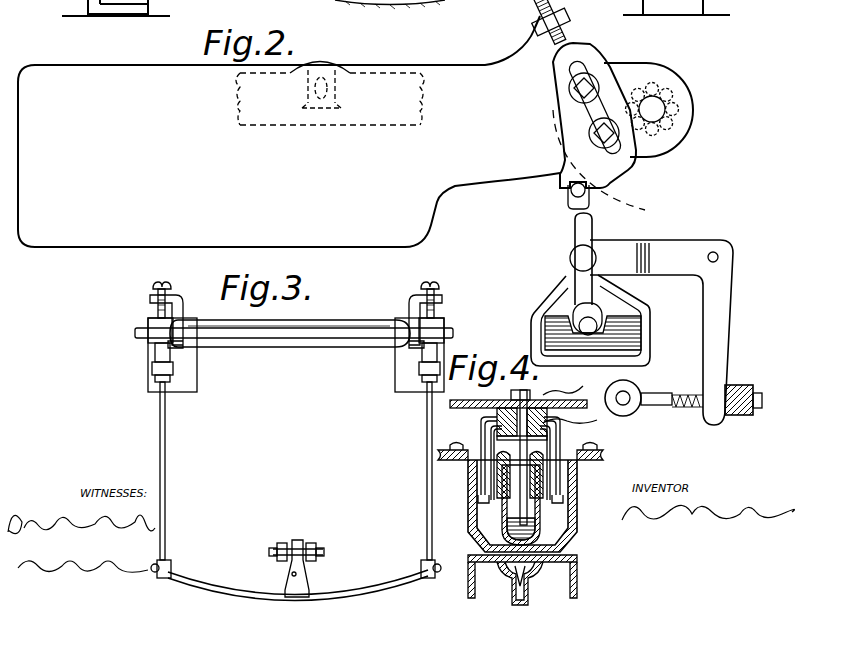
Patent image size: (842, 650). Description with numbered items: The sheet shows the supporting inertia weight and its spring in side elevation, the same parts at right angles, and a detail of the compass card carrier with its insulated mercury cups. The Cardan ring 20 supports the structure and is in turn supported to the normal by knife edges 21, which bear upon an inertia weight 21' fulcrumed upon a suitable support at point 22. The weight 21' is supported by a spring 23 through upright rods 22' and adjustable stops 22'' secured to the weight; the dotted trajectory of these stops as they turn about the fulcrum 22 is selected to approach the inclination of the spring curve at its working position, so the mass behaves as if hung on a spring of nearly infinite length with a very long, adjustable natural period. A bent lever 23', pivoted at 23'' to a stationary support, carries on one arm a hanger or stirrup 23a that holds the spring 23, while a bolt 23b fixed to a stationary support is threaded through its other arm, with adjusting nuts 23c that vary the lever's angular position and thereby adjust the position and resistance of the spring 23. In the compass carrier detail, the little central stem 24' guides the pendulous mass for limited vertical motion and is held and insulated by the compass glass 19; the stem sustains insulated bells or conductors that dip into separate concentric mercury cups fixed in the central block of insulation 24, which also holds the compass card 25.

In FIG. 4, the compass glass 19 is at (490, 410).
In FIG. 2, the Cardan ring 20 is at (330, 99).
In FIG. 2, the knife edges 21 is at (330, 72).
In FIG. 2, the weight 21' is at (289, 131).
In FIG. 3, the weight 21' is at (296, 345).
In FIG. 2, the fulcrum point 22 is at (667, 110).
In FIG. 3, the fulcrum point 22 is at (294, 349).
In FIG. 2, the upright rods 22' is at (566, 274).
In FIG. 3, the upright rods 22' is at (296, 480).
In FIG. 2, the adjustable stops 22'' is at (602, 105).
In FIG. 2, the spring 23 is at (614, 332).
In FIG. 3, the spring 23 is at (298, 576).
In FIG. 2, the bent lever 23' is at (651, 332).
In FIG. 3, the bent lever 23' is at (299, 556).
In FIG. 2, the pivot 23'' is at (745, 242).
In FIG. 2, the hanger or stirrup 23a is at (554, 292).
In FIG. 2, the bolt 23b is at (655, 396).
In FIG. 2, the adjusting nuts 23c is at (735, 384).
In FIG. 3, the adjusting nuts 23c is at (292, 574).
In FIG. 4, the central block of insulation 24 is at (539, 497).
In FIG. 4, the central stem 24' is at (500, 512).
In FIG. 4, the compass card 25 is at (603, 454).